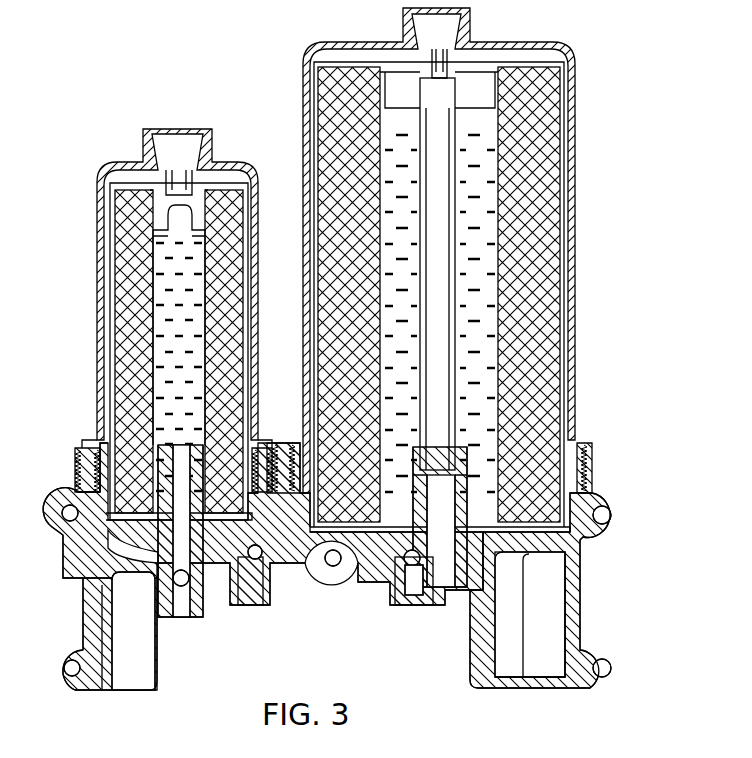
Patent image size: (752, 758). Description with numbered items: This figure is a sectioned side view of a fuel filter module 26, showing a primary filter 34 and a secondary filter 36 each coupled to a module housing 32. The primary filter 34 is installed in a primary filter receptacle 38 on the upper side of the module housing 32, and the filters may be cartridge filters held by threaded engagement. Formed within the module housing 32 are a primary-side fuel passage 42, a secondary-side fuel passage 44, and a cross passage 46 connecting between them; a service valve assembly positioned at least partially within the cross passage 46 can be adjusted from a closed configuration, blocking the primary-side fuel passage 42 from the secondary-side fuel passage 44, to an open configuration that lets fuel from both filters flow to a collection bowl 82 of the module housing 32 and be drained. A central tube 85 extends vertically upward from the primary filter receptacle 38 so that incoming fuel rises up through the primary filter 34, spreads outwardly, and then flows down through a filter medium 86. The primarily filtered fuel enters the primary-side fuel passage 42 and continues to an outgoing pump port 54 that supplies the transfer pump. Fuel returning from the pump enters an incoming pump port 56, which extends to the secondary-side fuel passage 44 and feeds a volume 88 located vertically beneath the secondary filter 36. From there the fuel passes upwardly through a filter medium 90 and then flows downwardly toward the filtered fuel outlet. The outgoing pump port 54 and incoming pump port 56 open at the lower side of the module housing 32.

The fuel filter module 26 is at (604, 287).
The module housing 32 is at (618, 504).
The primary filter 34 is at (575, 93).
The secondary filter 36 is at (100, 212).
The primary filter receptacle 38 is at (575, 436).
The primary-side fuel passage 42 is at (412, 565).
The secondary-side fuel passage 44 is at (240, 557).
The cross passage 46 is at (333, 578).
The outgoing pump port 54 is at (443, 607).
The incoming pump port 56 is at (258, 607).
The collection bowl 82 is at (573, 591).
The central tube 85 is at (455, 143).
The filter medium 86 is at (548, 190).
The volume 88 is at (122, 535).
The filter medium 90 is at (122, 345).